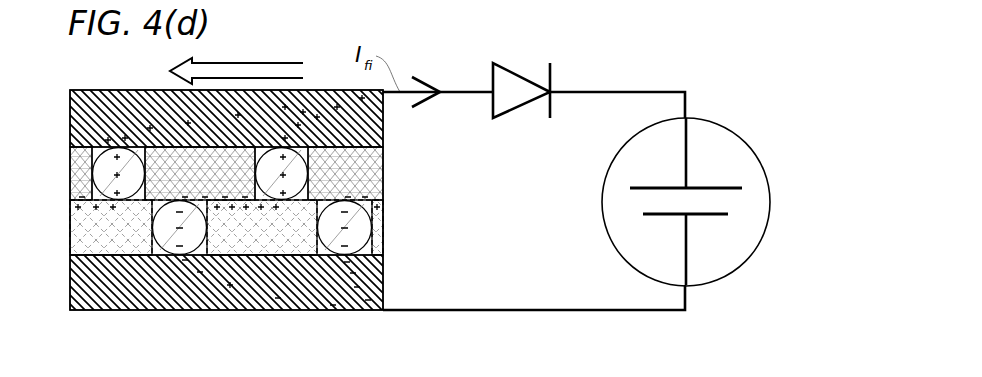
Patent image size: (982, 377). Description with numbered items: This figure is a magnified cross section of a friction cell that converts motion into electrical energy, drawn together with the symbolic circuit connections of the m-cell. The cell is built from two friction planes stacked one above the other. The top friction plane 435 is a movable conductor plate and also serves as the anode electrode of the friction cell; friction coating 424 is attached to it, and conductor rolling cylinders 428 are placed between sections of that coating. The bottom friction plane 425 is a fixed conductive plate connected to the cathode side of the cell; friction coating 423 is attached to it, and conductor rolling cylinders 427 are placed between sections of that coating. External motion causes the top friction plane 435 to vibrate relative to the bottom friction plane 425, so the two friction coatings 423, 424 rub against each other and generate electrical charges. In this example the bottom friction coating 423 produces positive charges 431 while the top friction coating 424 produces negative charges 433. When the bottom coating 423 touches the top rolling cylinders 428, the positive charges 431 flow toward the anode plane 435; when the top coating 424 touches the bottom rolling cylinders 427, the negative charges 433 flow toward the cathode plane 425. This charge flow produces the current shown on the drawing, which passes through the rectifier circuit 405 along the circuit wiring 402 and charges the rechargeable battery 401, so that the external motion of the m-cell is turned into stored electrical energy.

The rechargeable battery 401 is at (718, 165).
The circuit wiring 402 is at (688, 90).
The rectifier circuit 405 is at (503, 82).
The friction coating 423 is at (103, 256).
The friction coating 424 is at (175, 147).
The bottom friction plane 425 is at (173, 292).
The conductor rolling cylinders 427 is at (151, 252).
The conductor rolling cylinders 428 is at (101, 120).
The positive charges 431 is at (388, 133).
The negative charges 433 is at (350, 310).
The top friction plane 435 is at (305, 112).